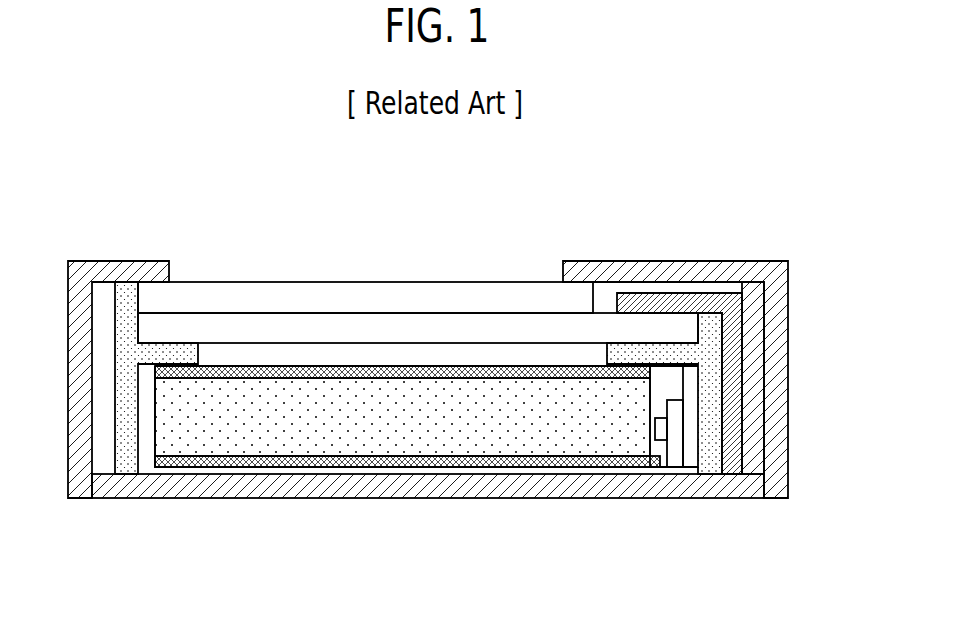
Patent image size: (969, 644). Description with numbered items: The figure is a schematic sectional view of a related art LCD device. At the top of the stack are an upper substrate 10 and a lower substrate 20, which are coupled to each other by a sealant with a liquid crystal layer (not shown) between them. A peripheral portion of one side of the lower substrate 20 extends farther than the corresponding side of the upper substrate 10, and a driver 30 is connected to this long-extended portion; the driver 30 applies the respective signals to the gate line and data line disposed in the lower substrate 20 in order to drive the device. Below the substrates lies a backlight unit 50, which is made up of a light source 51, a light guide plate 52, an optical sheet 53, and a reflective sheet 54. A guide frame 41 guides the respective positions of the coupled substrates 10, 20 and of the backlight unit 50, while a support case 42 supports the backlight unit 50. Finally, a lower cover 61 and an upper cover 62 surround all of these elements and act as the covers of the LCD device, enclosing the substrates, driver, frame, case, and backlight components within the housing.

The upper substrate 10 is at (335, 303).
The lower substrate 20 is at (388, 326).
The driver 30 is at (677, 308).
The guide frame 41 is at (712, 450).
The support case 42 is at (690, 453).
The backlight unit 50 is at (426, 478).
The light source 51 is at (619, 481).
The light guide plate 52 is at (447, 428).
The optical sheet 53 is at (488, 373).
The reflective sheet 54 is at (538, 465).
The lower cover 61 is at (755, 427).
The upper cover 62 is at (775, 398).